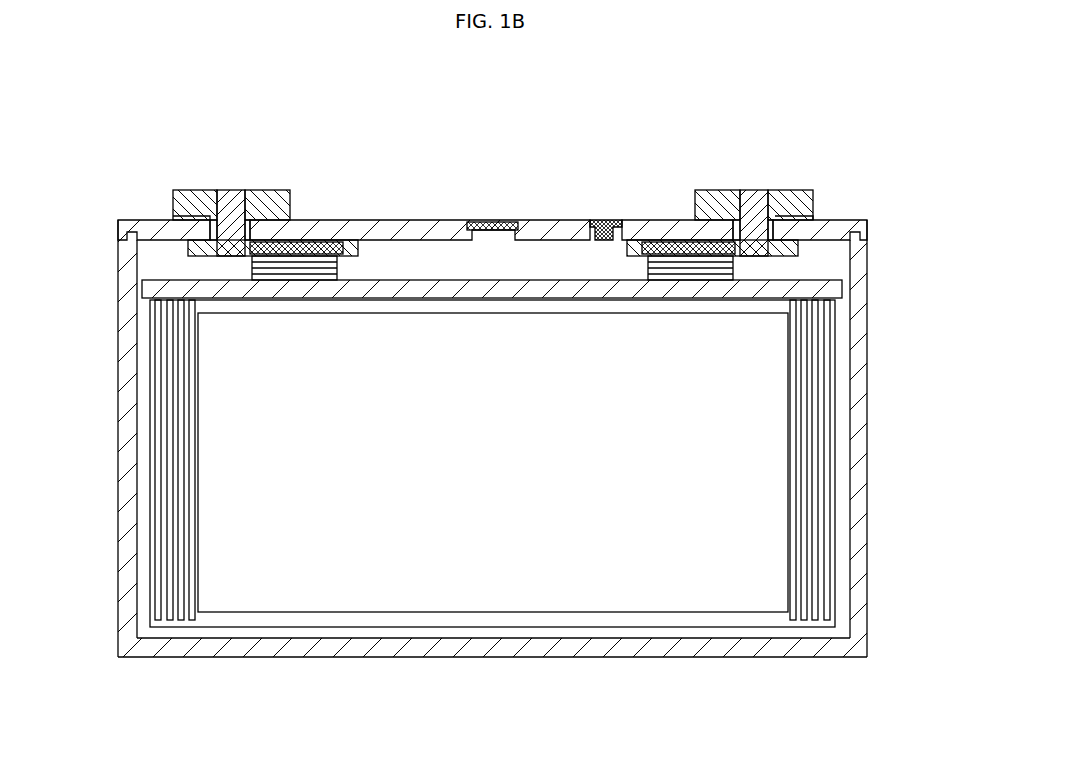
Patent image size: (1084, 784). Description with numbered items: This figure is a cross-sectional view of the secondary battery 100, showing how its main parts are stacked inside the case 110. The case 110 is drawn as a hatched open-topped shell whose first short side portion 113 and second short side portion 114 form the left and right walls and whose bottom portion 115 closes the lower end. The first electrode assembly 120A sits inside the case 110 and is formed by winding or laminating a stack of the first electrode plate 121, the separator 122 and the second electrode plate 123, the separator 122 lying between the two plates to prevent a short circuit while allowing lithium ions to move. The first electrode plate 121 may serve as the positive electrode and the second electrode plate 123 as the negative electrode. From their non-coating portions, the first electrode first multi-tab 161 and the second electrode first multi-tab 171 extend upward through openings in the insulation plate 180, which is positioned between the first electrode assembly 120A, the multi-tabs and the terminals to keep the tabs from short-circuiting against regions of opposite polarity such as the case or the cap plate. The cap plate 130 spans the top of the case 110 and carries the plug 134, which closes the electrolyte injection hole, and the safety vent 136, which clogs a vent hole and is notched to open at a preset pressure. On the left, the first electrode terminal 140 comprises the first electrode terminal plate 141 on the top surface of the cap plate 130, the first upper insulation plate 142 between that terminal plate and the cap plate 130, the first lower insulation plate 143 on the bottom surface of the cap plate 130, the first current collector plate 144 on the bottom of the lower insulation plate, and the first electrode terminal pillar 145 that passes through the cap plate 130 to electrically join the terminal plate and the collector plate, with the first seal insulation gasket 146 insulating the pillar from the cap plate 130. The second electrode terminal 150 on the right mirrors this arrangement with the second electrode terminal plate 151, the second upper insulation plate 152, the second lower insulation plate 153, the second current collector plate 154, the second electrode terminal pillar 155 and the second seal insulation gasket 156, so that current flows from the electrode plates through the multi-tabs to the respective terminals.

The secondary battery 100 is at (65, 80).
The case 110 is at (495, 469).
The first short side portion 113 is at (118, 437).
The second short side portion 114 is at (868, 437).
The bottom portion 115 is at (605, 658).
The first electrode assembly 120A is at (474, 507).
The first electrode plate 121 is at (330, 613).
The separator 122 is at (467, 620).
The second electrode plate 123 is at (190, 615).
The cap plate 130 is at (492, 196).
The plug 134 is at (606, 222).
The safety vent 136 is at (492, 222).
The first electrode terminal 140 is at (217, 174).
The first electrode terminal plate 141 is at (262, 190).
The first upper insulation plate 142 is at (173, 219).
The first lower insulation plate 143 is at (348, 245).
The first current collector plate 144 is at (300, 245).
The first electrode terminal pillar 145 is at (226, 192).
The first seal insulation gasket 146 is at (162, 234).
The second electrode terminal 150 is at (769, 172).
The second electrode terminal plate 151 is at (718, 190).
The second upper insulation plate 152 is at (816, 218).
The second lower insulation plate 153 is at (628, 244).
The second current collector plate 154 is at (680, 244).
The second electrode terminal pillar 155 is at (755, 192).
The second seal insulation gasket 156 is at (827, 236).
The first electrode first multi-tab 161 is at (338, 265).
The second electrode first multi-tab 171 is at (647, 265).
The insulation plate 180 is at (846, 288).